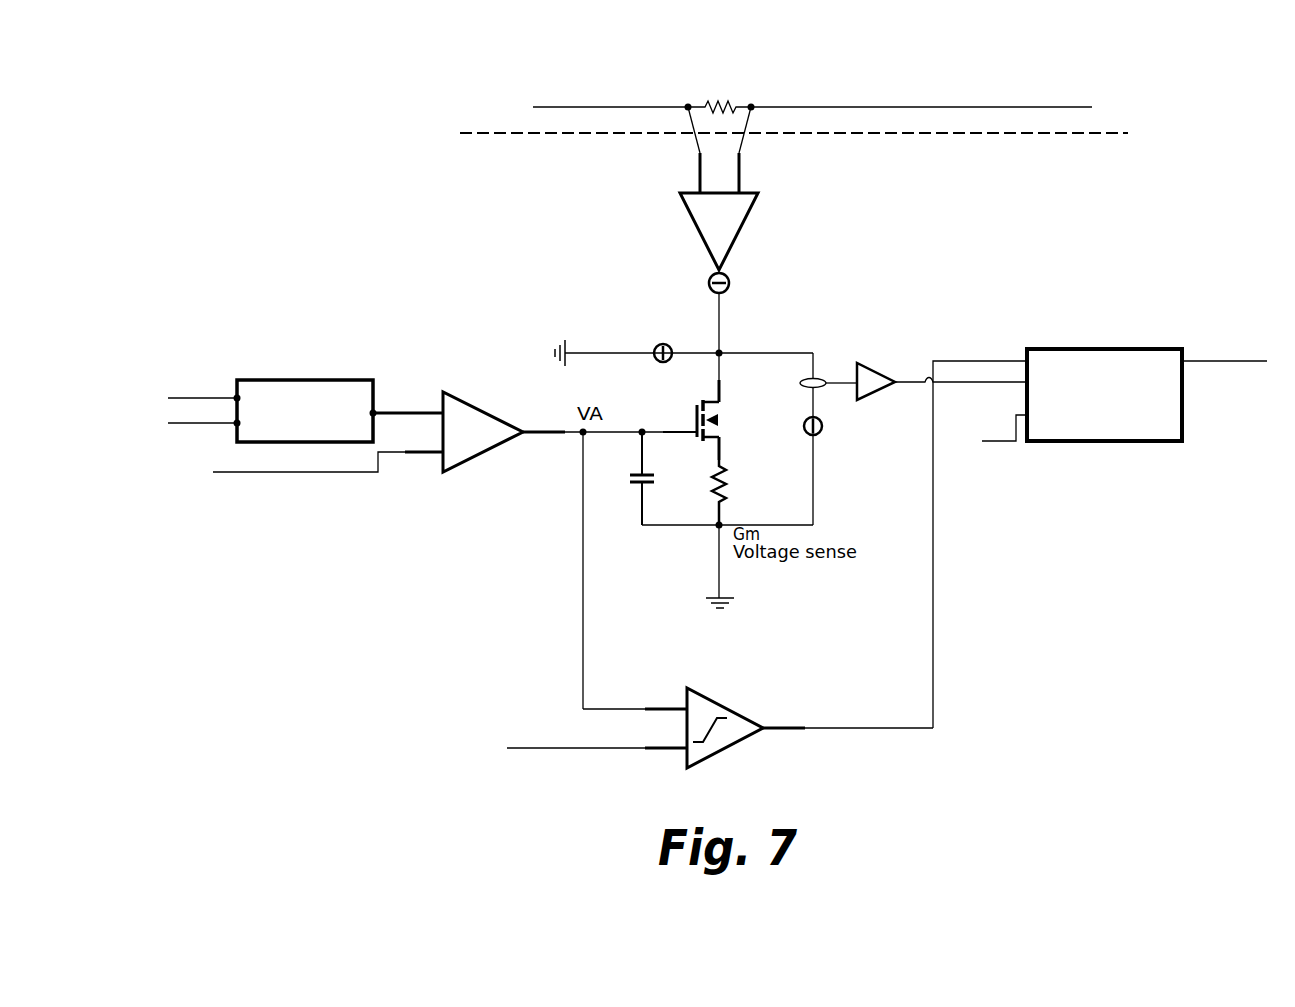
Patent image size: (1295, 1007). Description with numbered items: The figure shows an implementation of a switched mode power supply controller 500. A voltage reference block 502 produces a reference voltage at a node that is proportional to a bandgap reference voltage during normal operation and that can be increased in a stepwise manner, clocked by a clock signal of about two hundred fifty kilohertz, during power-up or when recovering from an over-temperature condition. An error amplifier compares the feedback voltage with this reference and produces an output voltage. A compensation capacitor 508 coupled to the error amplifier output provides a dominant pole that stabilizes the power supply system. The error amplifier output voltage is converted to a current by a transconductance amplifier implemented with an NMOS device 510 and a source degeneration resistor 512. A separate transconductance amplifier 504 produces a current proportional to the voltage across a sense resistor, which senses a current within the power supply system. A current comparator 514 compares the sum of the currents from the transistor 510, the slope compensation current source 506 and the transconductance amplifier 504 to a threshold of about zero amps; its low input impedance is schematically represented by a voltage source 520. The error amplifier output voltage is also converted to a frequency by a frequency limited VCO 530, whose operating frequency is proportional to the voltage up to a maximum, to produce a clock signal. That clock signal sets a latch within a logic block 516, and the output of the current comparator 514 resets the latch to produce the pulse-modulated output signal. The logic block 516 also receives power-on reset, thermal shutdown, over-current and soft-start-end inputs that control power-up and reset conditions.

The switched mode power supply controller 500 is at (157, 61).
The voltage reference block 502 is at (309, 380).
The transconductance amplifier 504 is at (736, 240).
The slope compensation current source 506 is at (657, 361).
The compensation capacitor 508 is at (632, 478).
The NMOS device 510 is at (720, 419).
The source degeneration resistor 512 is at (726, 484).
The current comparator 514 is at (868, 396).
The logic block 516 is at (1100, 349).
The voltage source 520 is at (820, 432).
The frequency limited VCO 530 is at (722, 706).